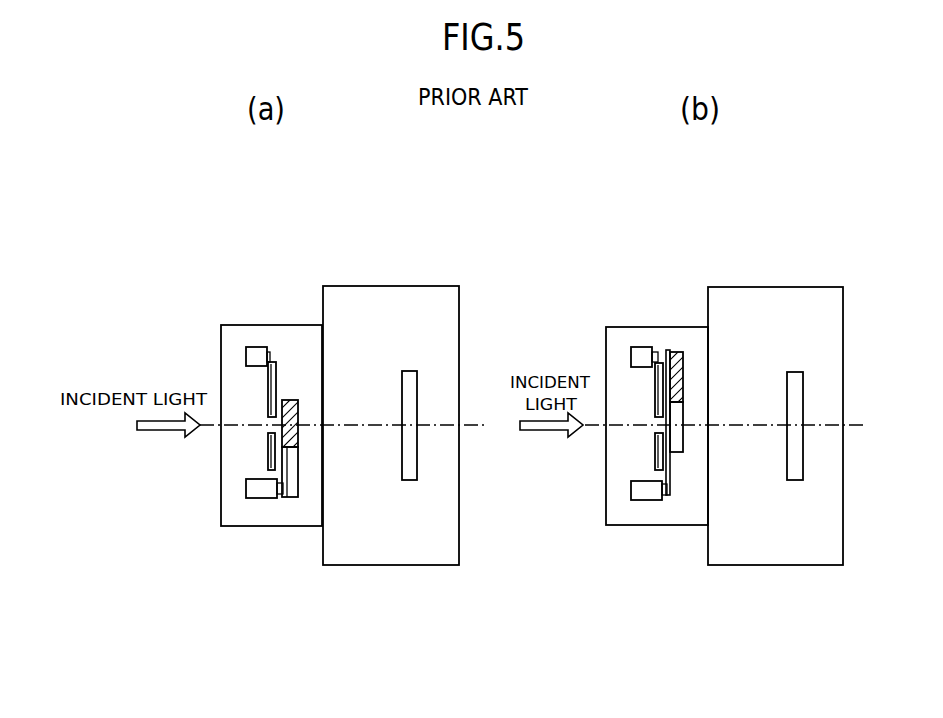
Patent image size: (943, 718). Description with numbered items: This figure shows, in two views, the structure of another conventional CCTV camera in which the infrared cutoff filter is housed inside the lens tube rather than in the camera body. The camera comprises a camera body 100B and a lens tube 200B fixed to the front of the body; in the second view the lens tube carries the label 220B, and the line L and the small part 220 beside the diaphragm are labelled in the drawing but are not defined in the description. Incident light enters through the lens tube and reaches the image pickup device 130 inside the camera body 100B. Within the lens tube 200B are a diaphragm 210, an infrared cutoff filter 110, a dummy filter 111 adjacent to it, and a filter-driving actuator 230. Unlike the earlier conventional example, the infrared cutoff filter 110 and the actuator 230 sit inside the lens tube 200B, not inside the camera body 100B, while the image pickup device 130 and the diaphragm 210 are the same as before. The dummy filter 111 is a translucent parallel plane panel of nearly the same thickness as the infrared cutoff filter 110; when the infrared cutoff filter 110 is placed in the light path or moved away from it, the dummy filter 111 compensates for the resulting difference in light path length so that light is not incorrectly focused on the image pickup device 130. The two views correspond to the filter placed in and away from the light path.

The camera body 100B is at (397, 278).
The lens tube 200B is at (292, 317).
The interchangeable lens unit (b) 220B is at (677, 317).
The front lens holder 220 is at (250, 348).
The diaphragm 210 is at (268, 395).
The infrared cutoff filter 110 is at (290, 398).
The dummy filter 111 is at (300, 479).
The image pickup device 130 is at (412, 370).
The filter-driving actuator 230 is at (257, 500).
The optical axis L is at (470, 412).